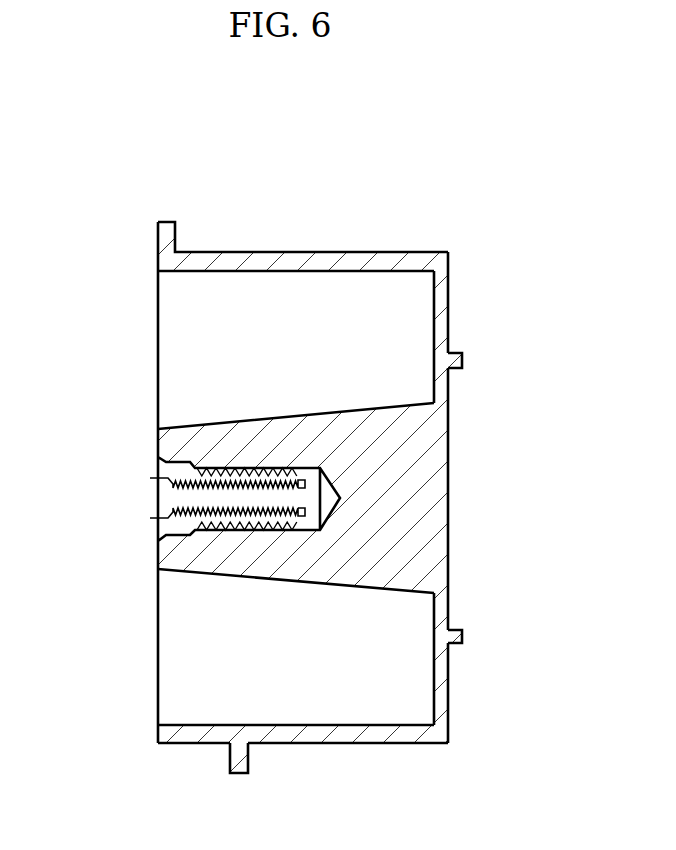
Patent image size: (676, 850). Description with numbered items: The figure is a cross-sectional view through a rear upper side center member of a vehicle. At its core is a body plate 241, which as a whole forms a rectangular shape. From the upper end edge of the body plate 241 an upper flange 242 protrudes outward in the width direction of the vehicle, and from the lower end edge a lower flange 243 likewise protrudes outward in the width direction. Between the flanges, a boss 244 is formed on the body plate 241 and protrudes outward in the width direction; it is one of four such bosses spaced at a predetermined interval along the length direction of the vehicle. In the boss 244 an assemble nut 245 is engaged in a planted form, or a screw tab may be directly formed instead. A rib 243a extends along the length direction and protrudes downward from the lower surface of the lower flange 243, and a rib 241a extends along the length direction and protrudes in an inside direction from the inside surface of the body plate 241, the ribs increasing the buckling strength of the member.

The body plate 241 is at (448, 703).
The rib 241a is at (462, 360).
The upper flange 242 is at (294, 252).
The lower flange 243 is at (347, 743).
The rib 243a is at (238, 773).
The boss 244 is at (213, 422).
The assemble nut 245 is at (150, 478).